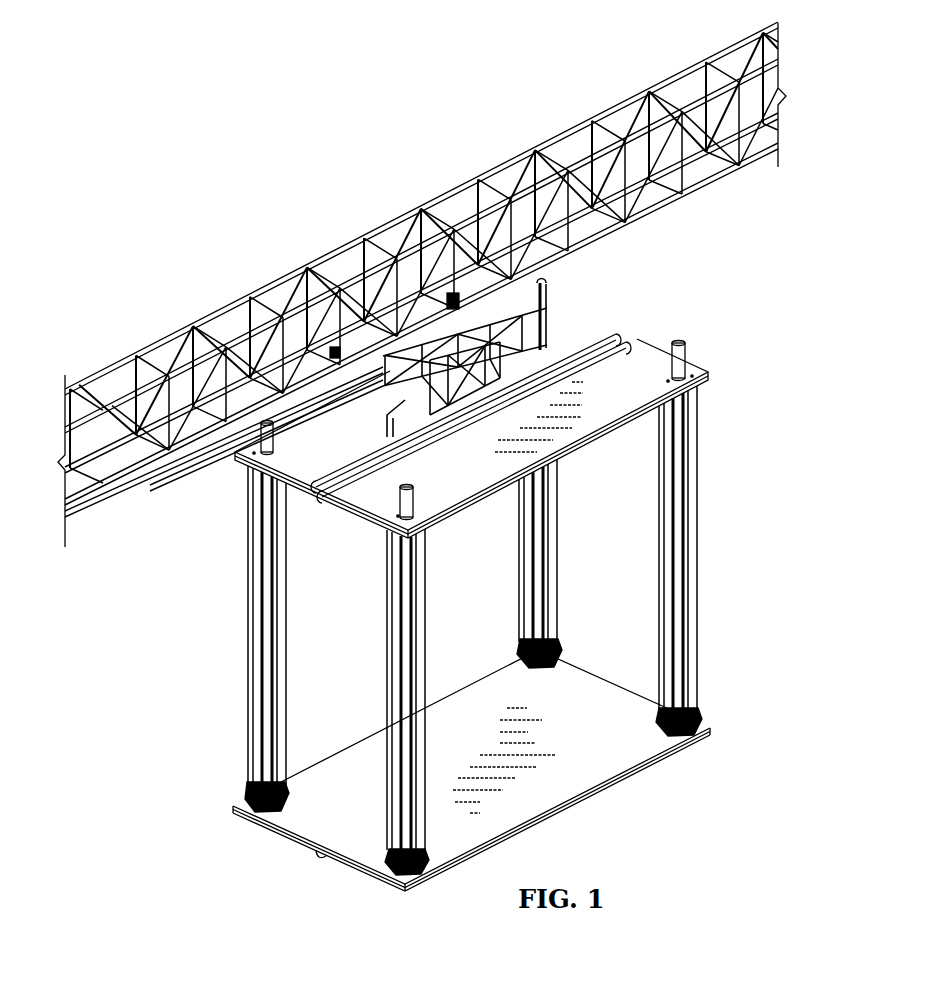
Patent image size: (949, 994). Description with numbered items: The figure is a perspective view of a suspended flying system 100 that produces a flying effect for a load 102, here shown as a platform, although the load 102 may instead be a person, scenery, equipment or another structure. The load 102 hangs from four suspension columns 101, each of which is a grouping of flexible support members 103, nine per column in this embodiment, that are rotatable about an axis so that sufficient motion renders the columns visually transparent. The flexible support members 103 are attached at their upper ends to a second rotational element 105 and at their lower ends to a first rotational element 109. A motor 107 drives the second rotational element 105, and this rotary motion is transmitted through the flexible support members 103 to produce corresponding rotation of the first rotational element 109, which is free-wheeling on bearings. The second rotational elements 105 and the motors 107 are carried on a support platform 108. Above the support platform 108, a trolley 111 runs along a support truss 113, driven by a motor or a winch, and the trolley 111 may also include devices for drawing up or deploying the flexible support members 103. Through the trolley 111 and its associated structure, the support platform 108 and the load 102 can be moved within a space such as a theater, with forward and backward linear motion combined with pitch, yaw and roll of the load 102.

The suspended flying system 100 is at (490, 456).
The suspension column 101 is at (479, 603).
The load 102 is at (570, 784).
The flexible support members 103 is at (700, 590).
The second rotational element 105 is at (700, 394).
The motor 107 is at (690, 338).
The support platform 108 is at (320, 468).
The first rotational element 109 is at (703, 722).
The trolley 111 is at (572, 316).
The support truss 113 is at (418, 213).